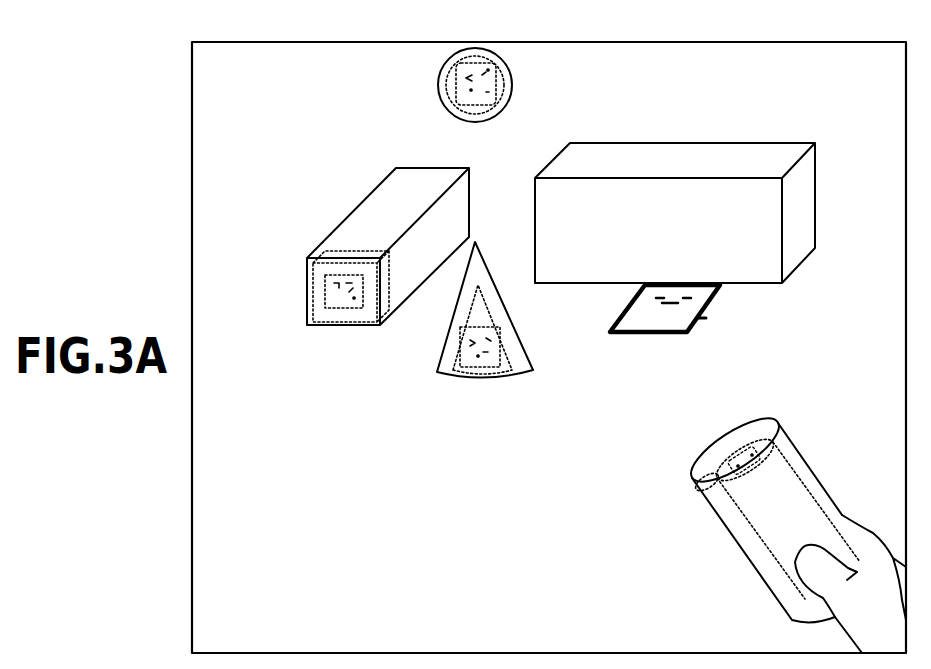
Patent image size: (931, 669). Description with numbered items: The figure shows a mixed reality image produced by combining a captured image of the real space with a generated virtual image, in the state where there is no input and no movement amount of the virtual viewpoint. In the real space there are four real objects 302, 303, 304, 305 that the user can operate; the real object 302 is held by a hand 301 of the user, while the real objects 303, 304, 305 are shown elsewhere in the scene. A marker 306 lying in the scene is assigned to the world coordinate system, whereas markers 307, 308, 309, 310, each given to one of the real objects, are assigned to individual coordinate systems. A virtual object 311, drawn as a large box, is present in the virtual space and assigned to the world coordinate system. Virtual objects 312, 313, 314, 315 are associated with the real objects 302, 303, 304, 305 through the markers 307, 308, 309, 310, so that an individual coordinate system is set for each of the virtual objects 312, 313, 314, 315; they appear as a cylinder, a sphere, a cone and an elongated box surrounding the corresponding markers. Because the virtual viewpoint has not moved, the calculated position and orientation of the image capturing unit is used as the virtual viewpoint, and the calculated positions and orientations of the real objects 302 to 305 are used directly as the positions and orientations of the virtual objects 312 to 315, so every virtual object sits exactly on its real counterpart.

The hand 301 is at (855, 522).
The real object 302 is at (798, 498).
The real object 303 is at (476, 112).
The real object 304 is at (483, 378).
The real object 305 is at (345, 315).
The marker 306 is at (653, 318).
The marker 307 is at (718, 477).
The marker 308 is at (458, 82).
The marker 309 is at (470, 347).
The marker 310 is at (330, 297).
The virtual object 311 is at (810, 206).
The virtual object 312 is at (713, 460).
The virtual object 313 is at (446, 62).
The virtual object 314 is at (498, 310).
The virtual object 315 is at (353, 228).